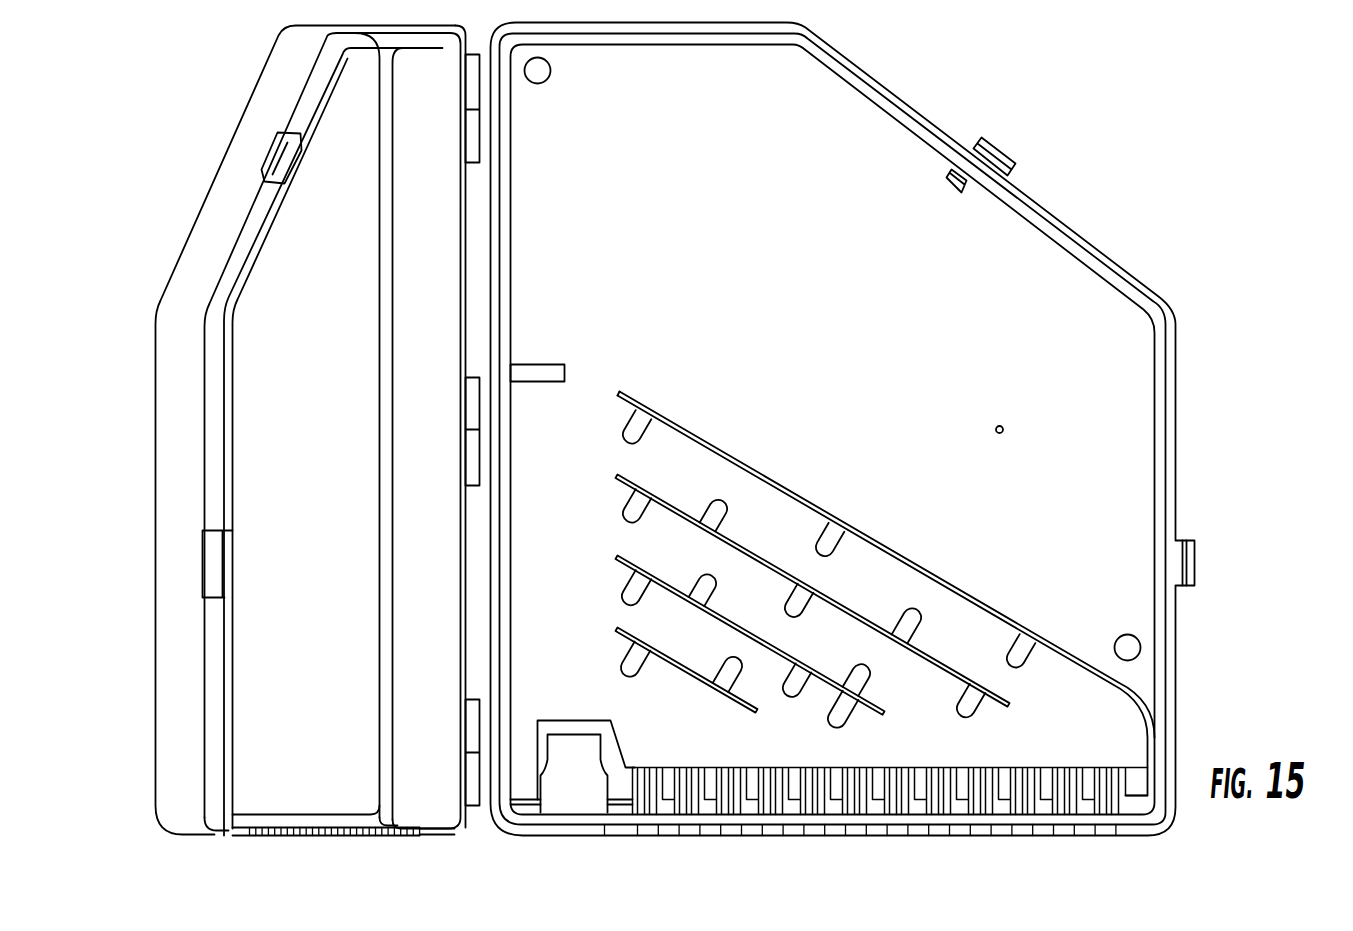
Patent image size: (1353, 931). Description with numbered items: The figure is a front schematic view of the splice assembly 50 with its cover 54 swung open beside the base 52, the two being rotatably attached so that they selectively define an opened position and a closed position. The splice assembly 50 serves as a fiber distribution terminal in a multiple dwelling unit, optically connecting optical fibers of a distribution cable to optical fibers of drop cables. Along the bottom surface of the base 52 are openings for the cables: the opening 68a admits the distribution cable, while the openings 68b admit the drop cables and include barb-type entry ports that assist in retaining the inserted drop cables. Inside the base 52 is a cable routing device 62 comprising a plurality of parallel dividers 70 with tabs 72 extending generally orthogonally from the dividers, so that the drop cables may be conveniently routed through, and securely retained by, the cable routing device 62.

The splice assembly 50 is at (1148, 157).
The base 52 is at (679, 221).
The cover 54 is at (289, 386).
The cable routing device 62 is at (823, 505).
The parallel dividers 70 is at (905, 551).
The tabs 72 is at (827, 548).
The opening 68a is at (576, 802).
The openings 68b is at (873, 800).